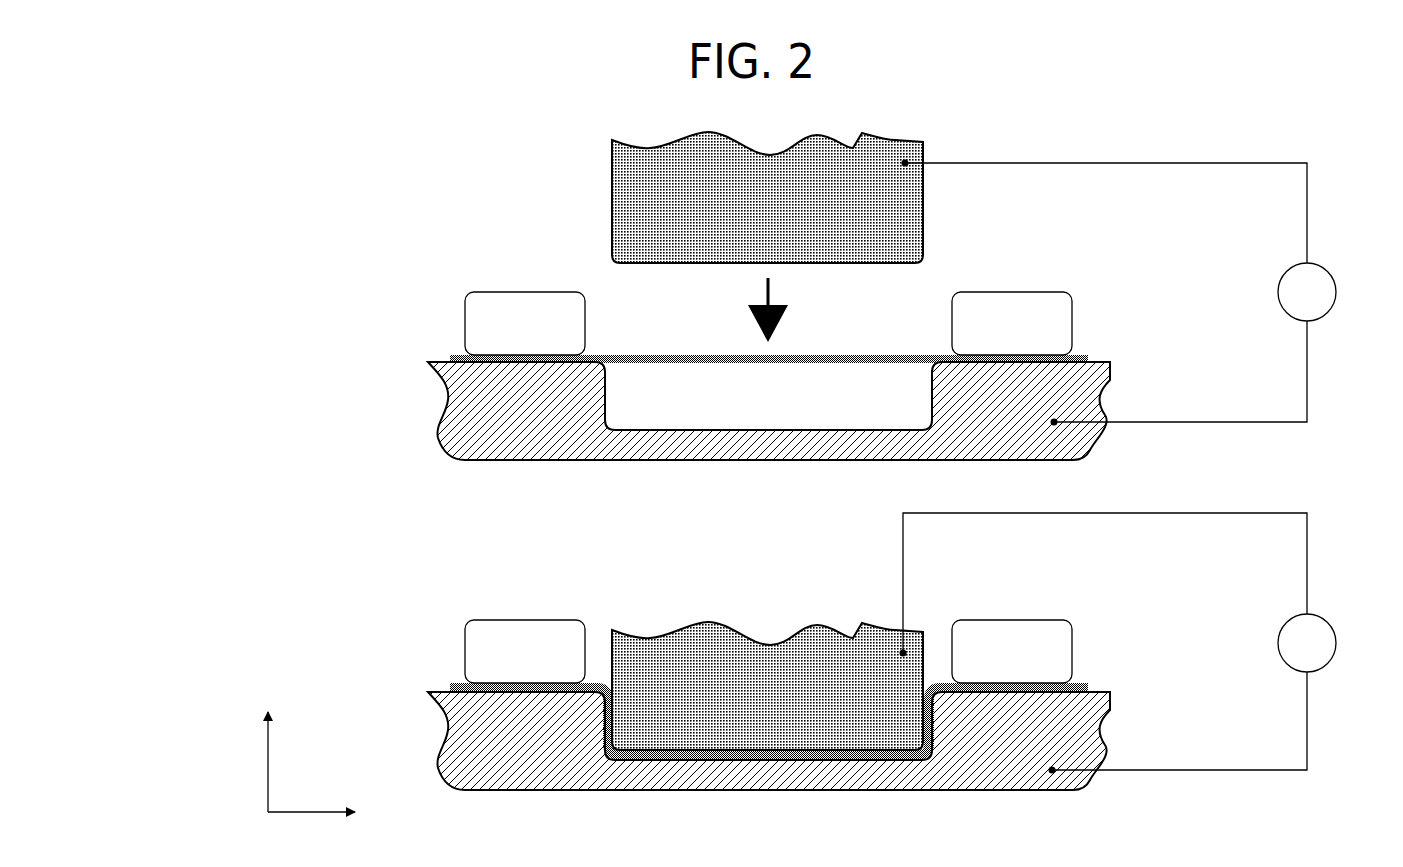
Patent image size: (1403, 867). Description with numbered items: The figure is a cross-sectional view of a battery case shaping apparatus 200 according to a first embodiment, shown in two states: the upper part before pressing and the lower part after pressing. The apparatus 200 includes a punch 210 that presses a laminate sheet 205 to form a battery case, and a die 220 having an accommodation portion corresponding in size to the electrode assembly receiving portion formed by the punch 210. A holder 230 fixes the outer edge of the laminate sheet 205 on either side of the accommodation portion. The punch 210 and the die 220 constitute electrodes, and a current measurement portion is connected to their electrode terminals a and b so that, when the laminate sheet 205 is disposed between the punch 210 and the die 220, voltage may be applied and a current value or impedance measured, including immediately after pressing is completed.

The battery case shaping apparatus 200 is at (782, 495).
The laminate sheet 205 is at (653, 348).
The punch 210 is at (934, 232).
The die 220 is at (1110, 393).
The holder 230 is at (1076, 292).